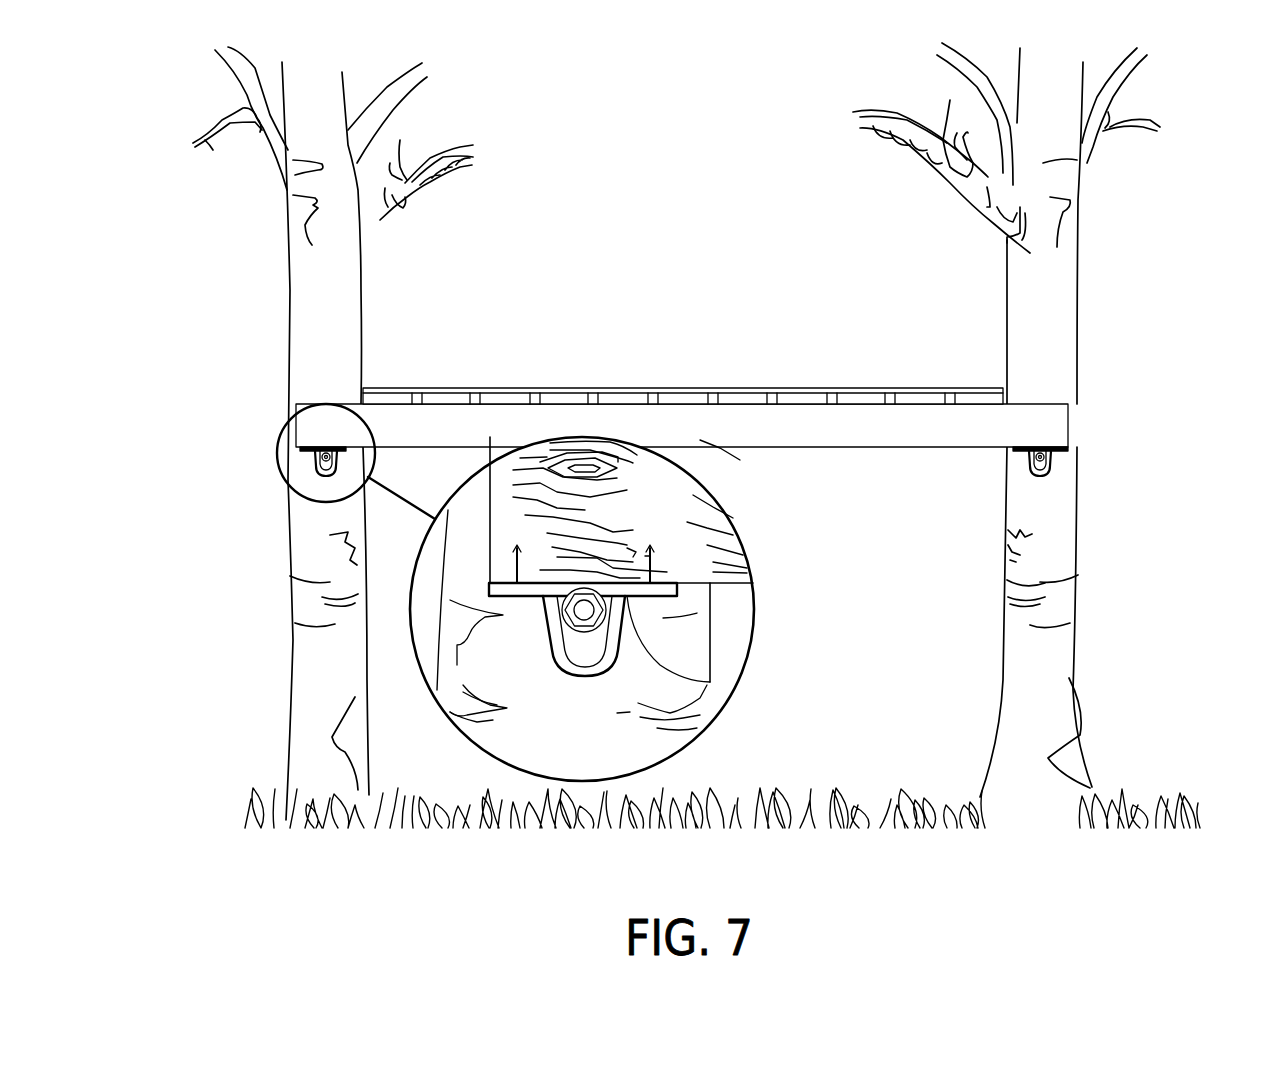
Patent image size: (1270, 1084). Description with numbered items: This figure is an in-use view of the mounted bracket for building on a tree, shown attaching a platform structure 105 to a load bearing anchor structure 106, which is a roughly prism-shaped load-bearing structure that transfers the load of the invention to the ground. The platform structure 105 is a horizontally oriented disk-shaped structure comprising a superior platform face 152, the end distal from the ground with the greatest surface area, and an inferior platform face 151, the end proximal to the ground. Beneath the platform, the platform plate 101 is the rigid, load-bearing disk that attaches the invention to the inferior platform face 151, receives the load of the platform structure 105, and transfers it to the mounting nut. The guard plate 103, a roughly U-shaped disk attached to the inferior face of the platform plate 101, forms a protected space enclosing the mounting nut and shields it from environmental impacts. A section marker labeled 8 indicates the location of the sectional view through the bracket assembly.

The section line 8- 8 is at (892, 478).
The platform plate 101 is at (710, 682).
The guard plate 103 is at (593, 678).
The platform structure 105 is at (1040, 423).
The load bearing anchor structure 106 is at (1005, 185).
The inferior platform face 151 is at (735, 584).
The superior platform face 152 is at (693, 388).